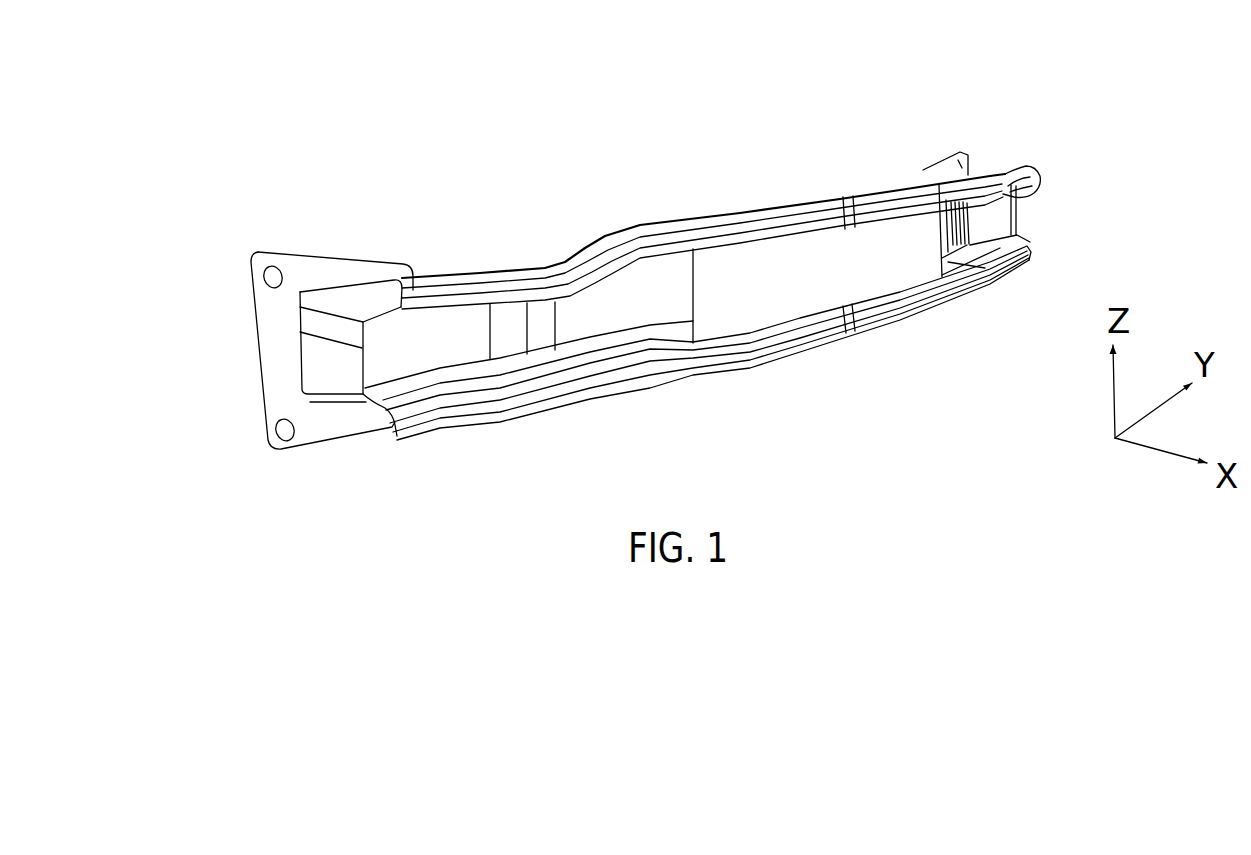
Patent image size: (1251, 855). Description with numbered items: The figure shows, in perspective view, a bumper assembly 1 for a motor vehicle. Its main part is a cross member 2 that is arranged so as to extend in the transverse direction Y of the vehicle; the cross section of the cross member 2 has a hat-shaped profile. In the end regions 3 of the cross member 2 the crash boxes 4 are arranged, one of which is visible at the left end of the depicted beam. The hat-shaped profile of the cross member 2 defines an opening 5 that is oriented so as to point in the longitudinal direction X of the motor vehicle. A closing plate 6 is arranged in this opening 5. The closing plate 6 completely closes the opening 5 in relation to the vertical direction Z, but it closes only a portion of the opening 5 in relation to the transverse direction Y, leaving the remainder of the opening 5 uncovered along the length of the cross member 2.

The bumper assembly 1 is at (266, 169).
The cross member 2 is at (631, 222).
The end regions 3 is at (437, 338).
The crash boxes 4 is at (322, 370).
The opening 5 is at (661, 309).
The closing plate 6 is at (718, 290).